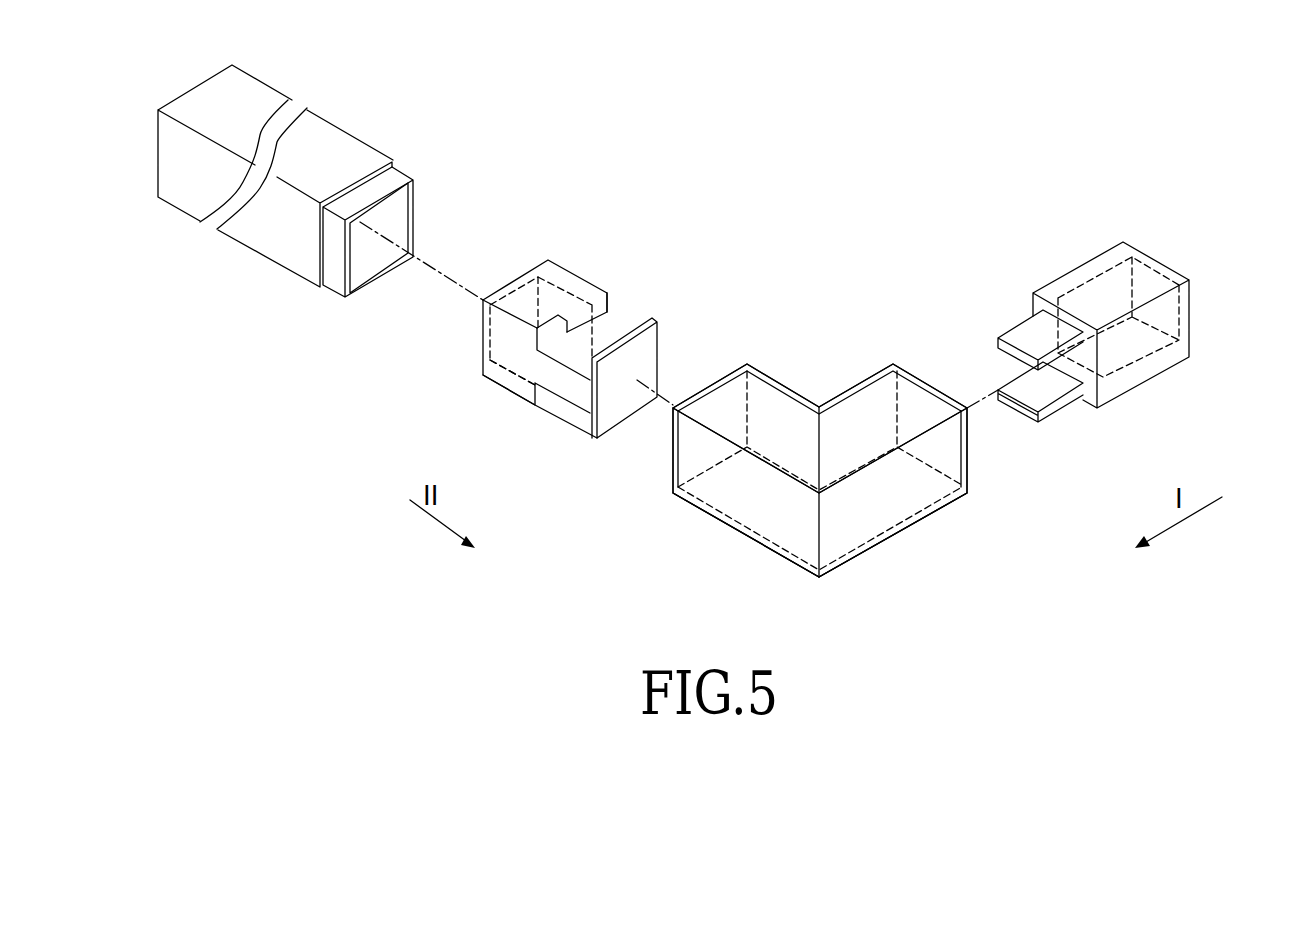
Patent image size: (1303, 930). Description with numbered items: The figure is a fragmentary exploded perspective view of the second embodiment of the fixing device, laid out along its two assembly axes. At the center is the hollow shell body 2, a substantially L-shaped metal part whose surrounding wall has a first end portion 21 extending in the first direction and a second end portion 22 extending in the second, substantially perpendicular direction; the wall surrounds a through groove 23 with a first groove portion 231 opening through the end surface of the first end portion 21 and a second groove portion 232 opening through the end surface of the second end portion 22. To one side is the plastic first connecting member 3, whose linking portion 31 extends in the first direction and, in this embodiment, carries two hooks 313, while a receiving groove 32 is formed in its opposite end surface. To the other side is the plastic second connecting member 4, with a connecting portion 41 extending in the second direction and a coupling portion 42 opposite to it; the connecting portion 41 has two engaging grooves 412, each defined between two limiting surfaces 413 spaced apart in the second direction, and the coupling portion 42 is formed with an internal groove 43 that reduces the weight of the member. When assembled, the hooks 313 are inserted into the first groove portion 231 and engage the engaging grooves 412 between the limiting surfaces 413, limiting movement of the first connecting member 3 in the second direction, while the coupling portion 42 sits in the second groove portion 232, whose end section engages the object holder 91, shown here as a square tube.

The object holder 91 is at (372, 136).
The second connecting member 4 is at (569, 324).
The connecting portion 41 is at (607, 328).
The engaging grooves 412 is at (572, 412).
The limiting surfaces 413 is at (593, 305).
The coupling portion 42 is at (484, 352).
The internal groove 43 is at (493, 368).
The hollow shell body 2 is at (812, 467).
The first end portion 21 is at (940, 510).
The second end portion 22 is at (692, 508).
The through groove 23 is at (780, 520).
The first groove portion 231 is at (873, 400).
The second groove portion 232 is at (762, 405).
The first connecting member 3 is at (1111, 317).
The linking portion 31 is at (1032, 328).
The hooks 313 is at (1055, 390).
The receiving groove 32 is at (1147, 291).